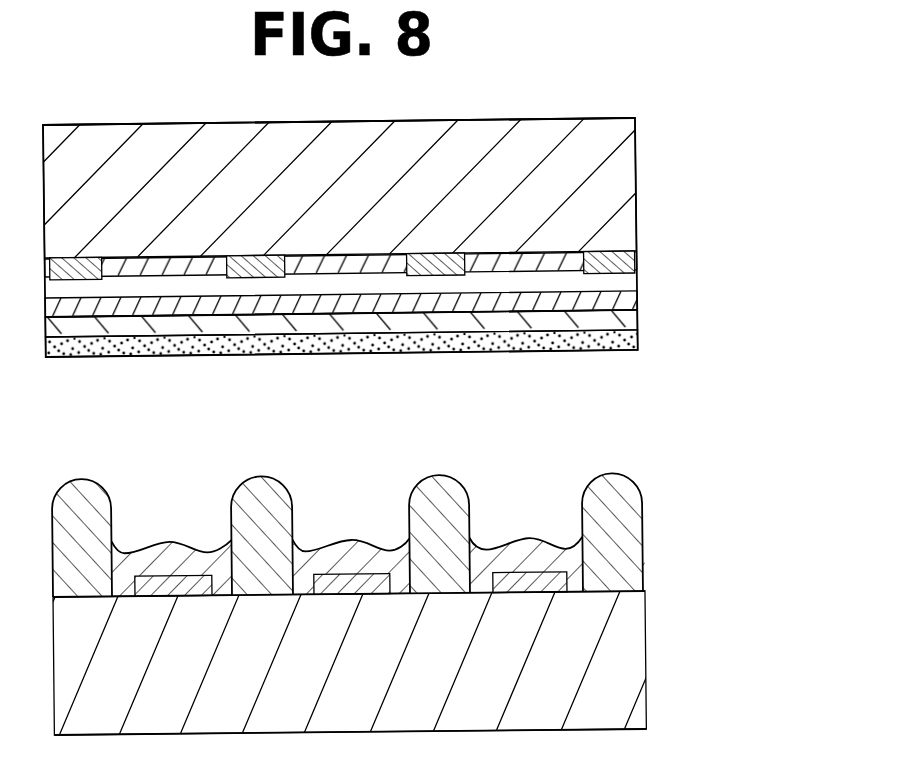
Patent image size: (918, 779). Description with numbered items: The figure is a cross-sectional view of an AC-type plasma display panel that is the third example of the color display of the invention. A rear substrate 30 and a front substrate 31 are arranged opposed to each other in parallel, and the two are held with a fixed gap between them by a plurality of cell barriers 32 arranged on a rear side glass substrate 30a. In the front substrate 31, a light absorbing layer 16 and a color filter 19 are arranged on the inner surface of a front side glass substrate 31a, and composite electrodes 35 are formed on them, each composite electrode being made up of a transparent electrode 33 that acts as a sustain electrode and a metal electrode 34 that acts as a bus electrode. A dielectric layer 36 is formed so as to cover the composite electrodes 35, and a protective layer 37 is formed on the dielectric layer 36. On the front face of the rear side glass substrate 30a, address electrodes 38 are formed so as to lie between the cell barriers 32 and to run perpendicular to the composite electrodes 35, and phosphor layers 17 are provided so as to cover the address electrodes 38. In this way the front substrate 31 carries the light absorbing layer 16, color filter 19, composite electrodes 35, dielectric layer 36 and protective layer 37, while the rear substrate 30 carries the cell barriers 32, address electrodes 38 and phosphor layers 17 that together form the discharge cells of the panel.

The light absorbing layer 16 is at (634, 257).
The phosphor layer 17 is at (353, 560).
The color filter 19 is at (123, 278).
The rear substrate 30 is at (667, 578).
The rear side glass substrate 30a is at (622, 676).
The front substrate 31 is at (672, 197).
The front side glass substrate 31a is at (618, 167).
The cell barrier 32 is at (623, 523).
The transparent electrode 33 is at (623, 284).
The metal electrode 34 is at (632, 303).
The composite electrode 35 is at (406, 343).
The dielectric layer 36 is at (473, 320).
The protective layer 37 is at (216, 343).
The address electrode 38 is at (523, 583).